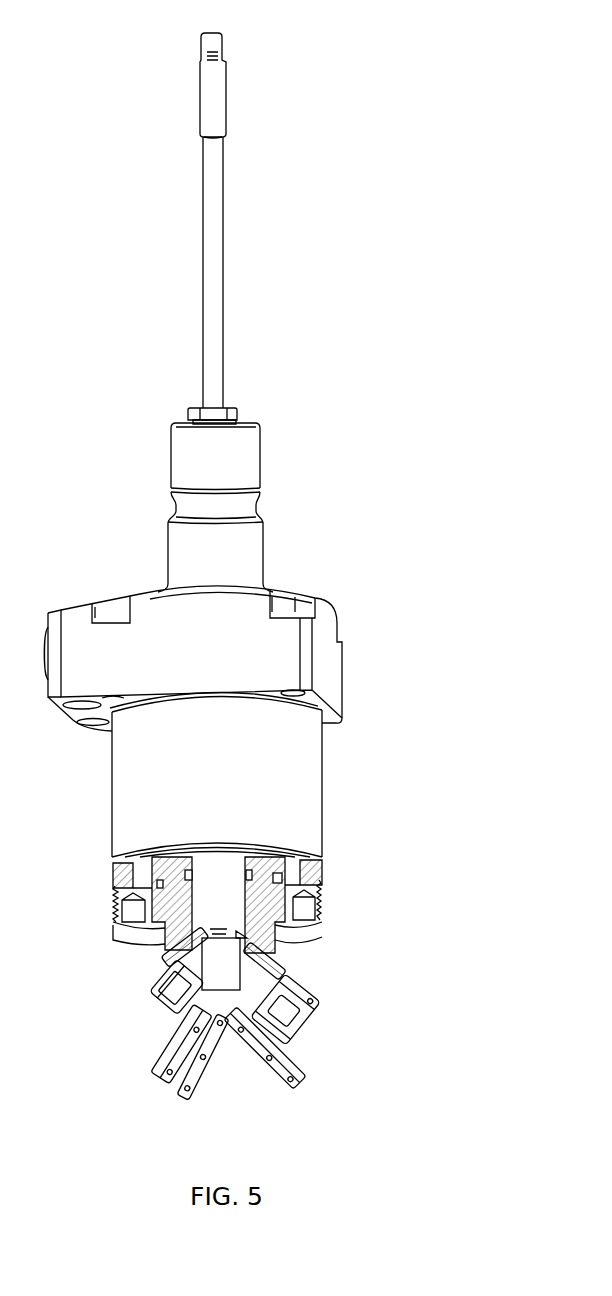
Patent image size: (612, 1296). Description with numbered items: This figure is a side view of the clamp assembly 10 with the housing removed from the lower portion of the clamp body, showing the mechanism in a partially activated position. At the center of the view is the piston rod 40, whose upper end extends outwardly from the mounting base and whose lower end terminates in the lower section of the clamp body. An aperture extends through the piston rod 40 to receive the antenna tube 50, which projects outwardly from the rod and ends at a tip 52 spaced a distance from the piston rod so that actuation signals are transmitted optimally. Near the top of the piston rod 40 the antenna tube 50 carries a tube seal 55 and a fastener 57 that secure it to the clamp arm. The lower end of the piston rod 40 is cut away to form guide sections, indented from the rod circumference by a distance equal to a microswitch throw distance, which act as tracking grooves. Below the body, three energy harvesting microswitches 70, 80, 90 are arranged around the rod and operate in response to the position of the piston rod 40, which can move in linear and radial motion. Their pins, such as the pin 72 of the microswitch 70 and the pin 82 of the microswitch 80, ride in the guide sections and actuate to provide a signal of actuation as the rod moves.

The syringe drive assembly 10 is at (390, 612).
The piston rod 40 is at (263, 550).
The antenna tube 50 is at (227, 273).
The tip 52 is at (228, 33).
The tube seal 55 is at (240, 420).
The fastener 57 is at (231, 404).
The energy harvesting microswitch 70 is at (308, 1025).
The pin 72 is at (277, 952).
The energy harvesting microswitch 80 is at (160, 1022).
The pin 82 is at (163, 945).
The energy harvesting microswitch 90 is at (210, 1088).